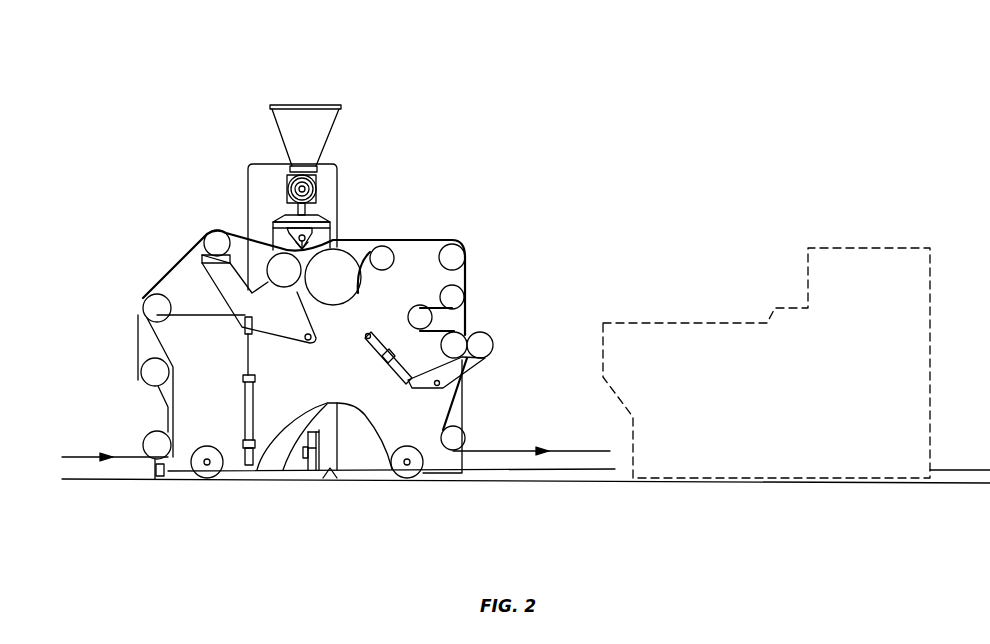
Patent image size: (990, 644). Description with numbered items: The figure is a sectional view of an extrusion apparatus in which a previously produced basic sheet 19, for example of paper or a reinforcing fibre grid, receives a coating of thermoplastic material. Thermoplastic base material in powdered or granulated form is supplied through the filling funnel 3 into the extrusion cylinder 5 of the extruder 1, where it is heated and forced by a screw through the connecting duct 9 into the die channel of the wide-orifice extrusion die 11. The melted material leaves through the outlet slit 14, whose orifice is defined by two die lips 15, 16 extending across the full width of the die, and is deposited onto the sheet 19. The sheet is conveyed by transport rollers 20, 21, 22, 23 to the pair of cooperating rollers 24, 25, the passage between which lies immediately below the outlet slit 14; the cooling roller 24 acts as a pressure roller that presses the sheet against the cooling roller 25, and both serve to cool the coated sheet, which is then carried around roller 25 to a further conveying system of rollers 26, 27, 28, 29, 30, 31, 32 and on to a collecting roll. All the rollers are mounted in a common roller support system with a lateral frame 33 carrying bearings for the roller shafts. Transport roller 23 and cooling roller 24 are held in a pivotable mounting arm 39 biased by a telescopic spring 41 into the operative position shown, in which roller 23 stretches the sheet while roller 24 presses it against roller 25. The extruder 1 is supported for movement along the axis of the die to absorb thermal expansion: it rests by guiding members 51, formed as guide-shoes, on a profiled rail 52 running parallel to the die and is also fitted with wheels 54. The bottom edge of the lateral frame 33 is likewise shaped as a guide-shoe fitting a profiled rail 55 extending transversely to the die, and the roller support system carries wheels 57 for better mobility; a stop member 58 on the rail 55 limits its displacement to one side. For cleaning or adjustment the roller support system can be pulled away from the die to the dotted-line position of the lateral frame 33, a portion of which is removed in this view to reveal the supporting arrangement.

The extruder 1 is at (334, 170).
The filling funnel 3 is at (328, 122).
The extrusion cylinder 5 is at (287, 178).
The connecting duct 9 is at (305, 210).
The wide-orifice extrusion die 11 is at (289, 216).
The outlet slit 14 is at (350, 239).
The die lip 15 is at (295, 250).
The die lip 16 is at (310, 243).
The basic sheet 19 is at (84, 455).
The transport roller 20 is at (144, 442).
The transport roller 21 is at (141, 375).
The transport roller 22 is at (143, 308).
The transport roller 23 is at (205, 238).
The cooling roller 24 is at (277, 287).
The cooling roller 25 is at (343, 300).
The roller 26 is at (393, 261).
The roller 27 is at (465, 258).
The roller 28 is at (464, 297).
The roller 29 is at (420, 308).
The roller 30 is at (441, 347).
The roller 31 is at (493, 348).
The roller 32 is at (465, 438).
The lateral frame 33 is at (138, 343).
The pivotable mounting arm 39 is at (271, 330).
The telescopic spring 41 is at (254, 388).
The guiding member 51 is at (332, 469).
The profiled rail 52 is at (333, 477).
The wheel 54 is at (308, 478).
The profiled rail 55 is at (543, 479).
The wheel 57 is at (203, 474).
The stop member 58 is at (163, 478).